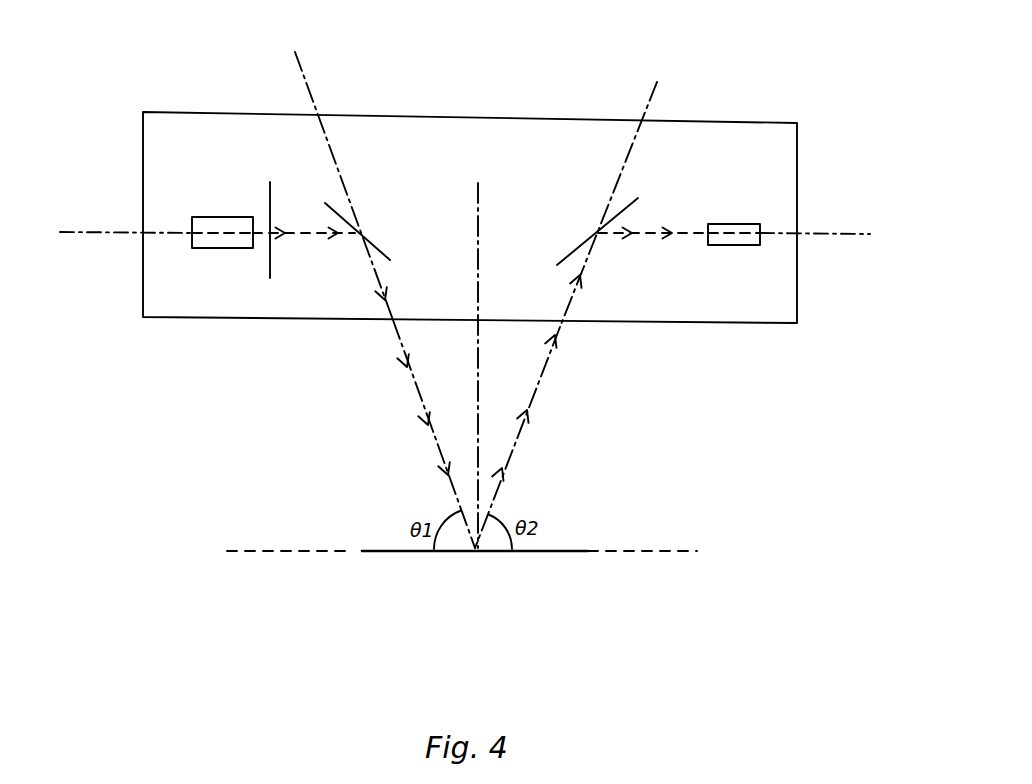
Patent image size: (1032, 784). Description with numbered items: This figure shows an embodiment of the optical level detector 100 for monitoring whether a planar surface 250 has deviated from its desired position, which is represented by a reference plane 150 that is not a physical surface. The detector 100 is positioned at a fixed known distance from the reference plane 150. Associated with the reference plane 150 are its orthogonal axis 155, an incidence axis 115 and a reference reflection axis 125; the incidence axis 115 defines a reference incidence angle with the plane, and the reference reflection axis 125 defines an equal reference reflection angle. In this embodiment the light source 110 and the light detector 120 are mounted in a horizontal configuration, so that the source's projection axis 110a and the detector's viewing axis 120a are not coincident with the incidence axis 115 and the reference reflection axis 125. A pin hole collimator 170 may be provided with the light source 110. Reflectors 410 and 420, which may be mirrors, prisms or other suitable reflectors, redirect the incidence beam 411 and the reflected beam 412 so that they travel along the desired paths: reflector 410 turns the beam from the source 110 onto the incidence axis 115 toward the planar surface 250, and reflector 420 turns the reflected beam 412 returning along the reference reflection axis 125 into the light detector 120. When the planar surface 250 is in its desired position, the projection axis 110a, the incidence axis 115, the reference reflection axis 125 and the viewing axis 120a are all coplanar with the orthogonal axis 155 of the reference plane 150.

The optical level detector 100 is at (172, 112).
The light source 110 is at (202, 215).
The projection axis 110a is at (118, 232).
The incidence axis 115 is at (337, 167).
The light detector 120 is at (737, 223).
The viewing axis 120a is at (815, 233).
The reference reflection axis 125 is at (627, 162).
The reference plane 150 is at (678, 550).
The orthogonal axis 155 is at (482, 195).
The pin hole collimator 170 is at (268, 265).
The planar surface 250 is at (548, 553).
The reflector 410 is at (387, 245).
The incidence beam 411 is at (413, 378).
The reflected beam 412 is at (548, 353).
The reflector 420 is at (570, 250).